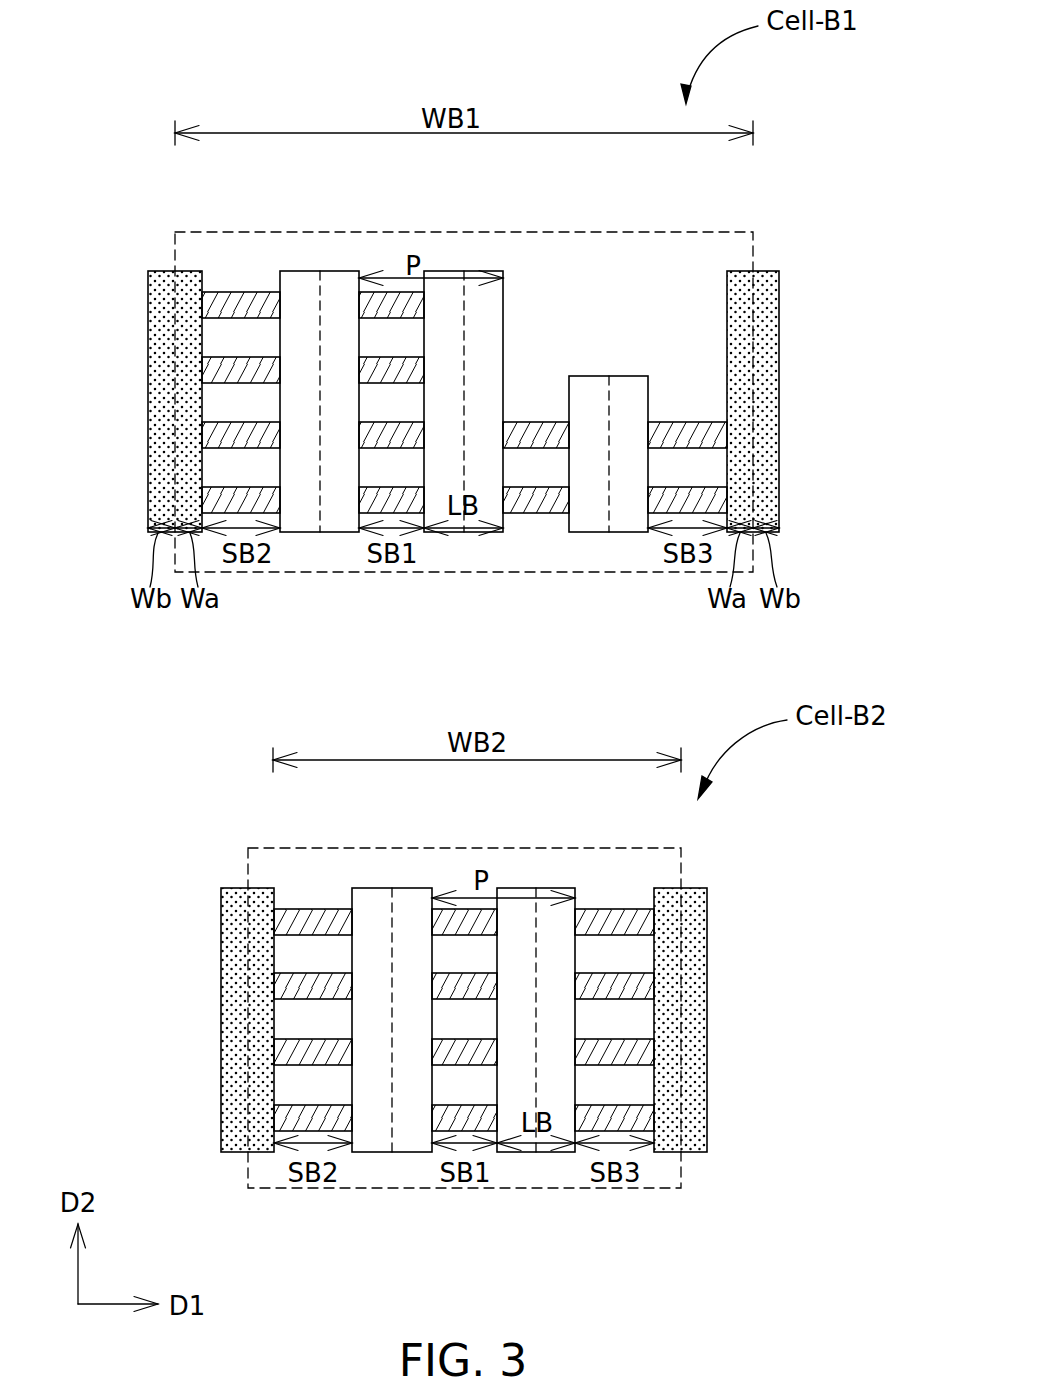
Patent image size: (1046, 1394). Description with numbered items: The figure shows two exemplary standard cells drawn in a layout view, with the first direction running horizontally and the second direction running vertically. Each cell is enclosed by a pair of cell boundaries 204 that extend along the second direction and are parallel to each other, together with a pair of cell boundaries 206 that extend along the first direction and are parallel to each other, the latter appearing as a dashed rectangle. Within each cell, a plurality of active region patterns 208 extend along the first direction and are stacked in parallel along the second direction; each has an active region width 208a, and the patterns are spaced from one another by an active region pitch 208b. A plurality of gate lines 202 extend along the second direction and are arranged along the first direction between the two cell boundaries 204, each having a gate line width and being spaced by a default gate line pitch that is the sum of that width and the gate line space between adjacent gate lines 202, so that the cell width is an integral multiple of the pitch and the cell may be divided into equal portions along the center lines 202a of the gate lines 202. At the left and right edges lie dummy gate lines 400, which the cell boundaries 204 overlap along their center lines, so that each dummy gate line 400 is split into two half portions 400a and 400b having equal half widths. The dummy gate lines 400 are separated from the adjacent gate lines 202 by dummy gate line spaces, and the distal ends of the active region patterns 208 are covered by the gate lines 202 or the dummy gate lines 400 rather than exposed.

The gate lines 202 is at (320, 271).
The center lines of the gate lines 202a is at (320, 300).
The cell boundaries 204 is at (175, 253).
The cell boundaries 206 is at (390, 232).
The active region patterns 208 is at (418, 338).
The active region width 208a is at (272, 327).
The active region pitch 208b is at (370, 357).
The dummy gate lines 400 is at (230, 196).
The half portion 400a is at (190, 300).
The half portion 400b is at (148, 345).